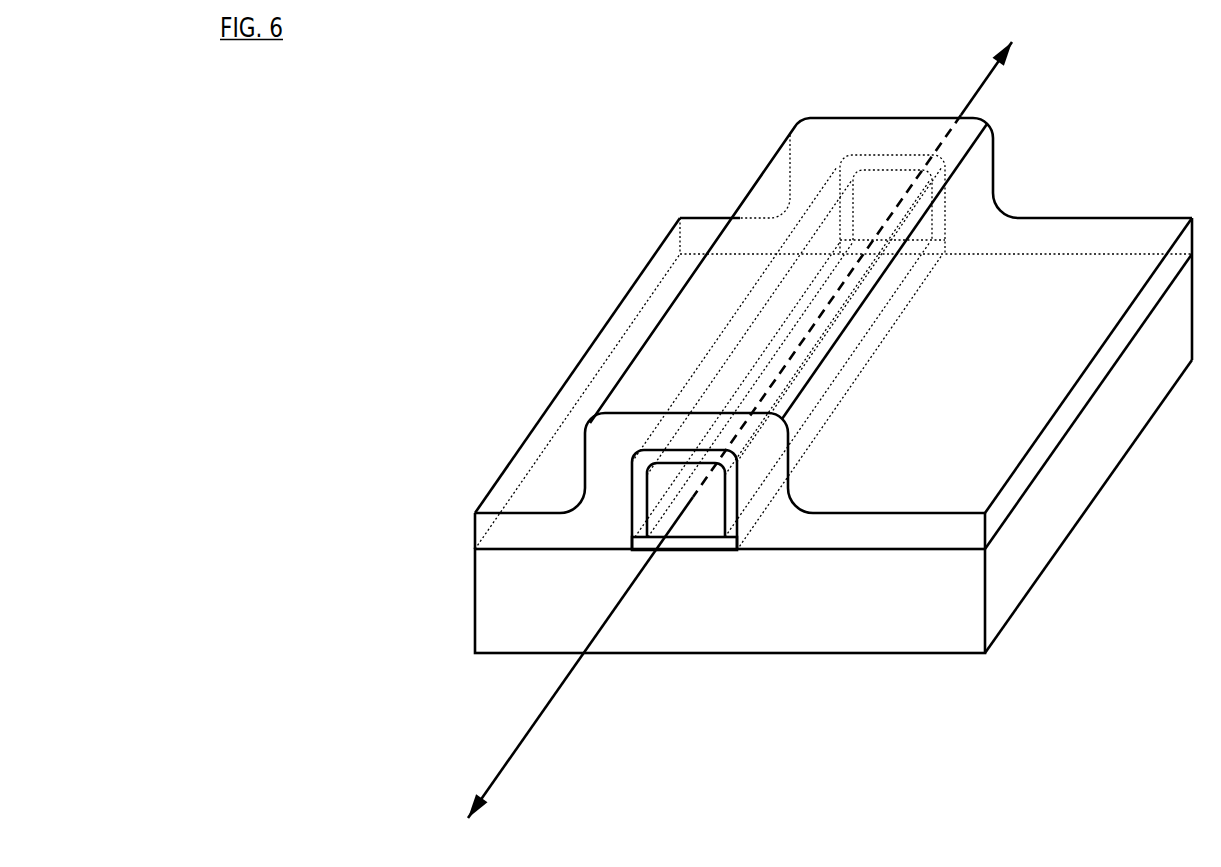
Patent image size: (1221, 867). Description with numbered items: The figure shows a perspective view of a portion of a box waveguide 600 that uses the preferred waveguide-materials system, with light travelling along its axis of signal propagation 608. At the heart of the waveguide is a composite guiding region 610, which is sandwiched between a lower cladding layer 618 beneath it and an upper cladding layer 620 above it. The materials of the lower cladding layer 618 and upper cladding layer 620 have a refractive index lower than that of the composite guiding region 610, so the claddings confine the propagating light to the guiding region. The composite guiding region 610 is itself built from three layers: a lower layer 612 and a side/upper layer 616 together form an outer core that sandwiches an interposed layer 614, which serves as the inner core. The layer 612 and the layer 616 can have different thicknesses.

The box waveguide 600 is at (571, 178).
The axis of signal propagation 608 is at (572, 670).
The composite guiding region 610 is at (607, 502).
The layer 612 is at (677, 541).
The interposed layer 614 is at (693, 512).
The layer 616 is at (672, 458).
The lower cladding layer 618 is at (541, 621).
The upper cladding layer 620 is at (928, 544).